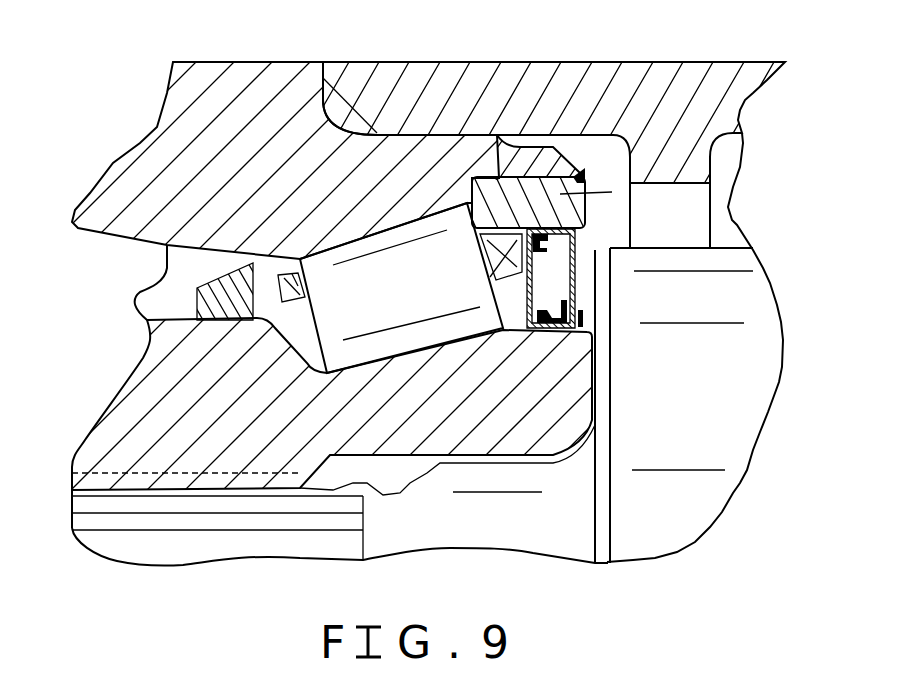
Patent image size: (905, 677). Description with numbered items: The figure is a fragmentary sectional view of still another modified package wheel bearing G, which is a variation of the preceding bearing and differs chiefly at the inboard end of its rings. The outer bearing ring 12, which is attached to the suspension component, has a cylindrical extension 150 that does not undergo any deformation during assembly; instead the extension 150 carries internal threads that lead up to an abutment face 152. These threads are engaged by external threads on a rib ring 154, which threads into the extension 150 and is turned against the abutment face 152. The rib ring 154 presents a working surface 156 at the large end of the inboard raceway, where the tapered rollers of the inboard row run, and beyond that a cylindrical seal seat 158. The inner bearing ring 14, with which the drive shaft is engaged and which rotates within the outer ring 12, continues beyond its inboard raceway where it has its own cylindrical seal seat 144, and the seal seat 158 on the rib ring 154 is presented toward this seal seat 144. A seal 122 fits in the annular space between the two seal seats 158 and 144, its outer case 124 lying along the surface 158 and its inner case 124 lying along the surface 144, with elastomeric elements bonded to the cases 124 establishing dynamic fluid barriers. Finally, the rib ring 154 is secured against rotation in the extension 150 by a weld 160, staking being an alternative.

The modified bearing G is at (98, 150).
The outer bearing ring 12 is at (173, 151).
The inner bearing ring 14 is at (145, 397).
The seal 122 is at (585, 358).
The case 124 is at (588, 289).
The cylindrical seal seat 144 is at (590, 315).
The cylindrical extension 150 is at (547, 147).
The abutment face 152 is at (497, 178).
The rib ring 154 is at (612, 193).
The working surface 156 is at (482, 222).
The cylindrical seal seat 158 is at (493, 285).
The weld 160 is at (585, 177).